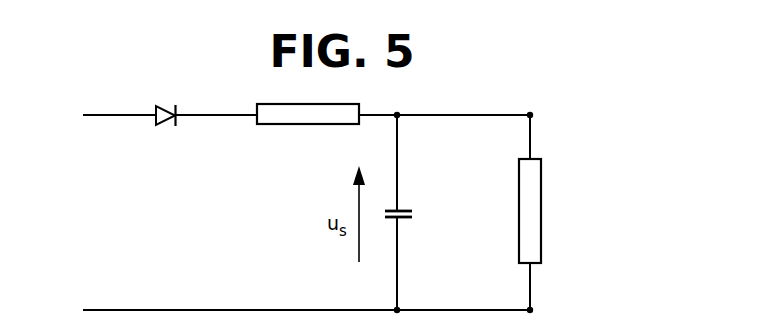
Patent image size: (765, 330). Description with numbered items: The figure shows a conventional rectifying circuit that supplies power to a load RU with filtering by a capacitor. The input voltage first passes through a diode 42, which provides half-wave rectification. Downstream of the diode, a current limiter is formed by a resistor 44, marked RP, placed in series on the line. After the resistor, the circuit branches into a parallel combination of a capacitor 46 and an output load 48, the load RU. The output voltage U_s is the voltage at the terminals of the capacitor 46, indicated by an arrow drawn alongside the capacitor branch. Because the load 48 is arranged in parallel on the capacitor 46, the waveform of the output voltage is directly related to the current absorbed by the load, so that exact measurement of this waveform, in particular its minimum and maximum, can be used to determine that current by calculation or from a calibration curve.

The diode 42 is at (169, 127).
The resistor 44 is at (280, 125).
The capacitor 46 is at (402, 208).
The output load 48 is at (542, 169).